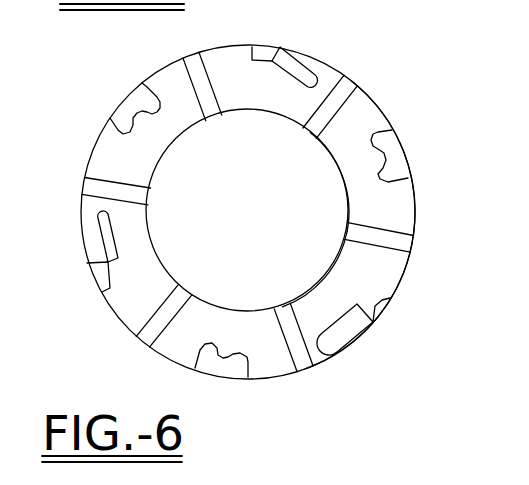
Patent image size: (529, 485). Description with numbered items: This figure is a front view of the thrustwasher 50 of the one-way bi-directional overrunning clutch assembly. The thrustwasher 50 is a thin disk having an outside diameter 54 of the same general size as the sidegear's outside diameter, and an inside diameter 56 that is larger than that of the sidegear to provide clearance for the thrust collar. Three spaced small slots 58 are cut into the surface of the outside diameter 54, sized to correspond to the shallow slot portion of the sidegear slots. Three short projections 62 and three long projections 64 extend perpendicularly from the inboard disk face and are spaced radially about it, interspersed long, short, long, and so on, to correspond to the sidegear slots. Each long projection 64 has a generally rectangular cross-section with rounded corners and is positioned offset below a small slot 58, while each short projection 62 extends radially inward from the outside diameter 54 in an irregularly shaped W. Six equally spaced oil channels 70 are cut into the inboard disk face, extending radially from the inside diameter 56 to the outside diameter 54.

The thrustwasher 50 is at (334, 56).
The outside diameter 54 is at (382, 109).
The inside diameter 56 is at (345, 180).
The small slots 58 is at (268, 58).
The short projections 62 is at (124, 107).
The long projections 64 is at (108, 239).
The oil channels 70 is at (90, 184).